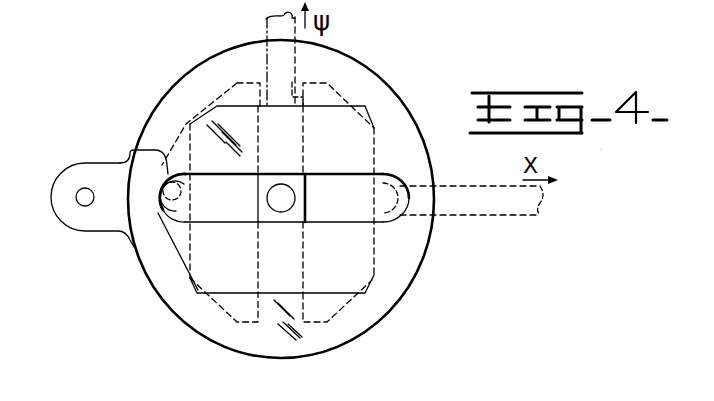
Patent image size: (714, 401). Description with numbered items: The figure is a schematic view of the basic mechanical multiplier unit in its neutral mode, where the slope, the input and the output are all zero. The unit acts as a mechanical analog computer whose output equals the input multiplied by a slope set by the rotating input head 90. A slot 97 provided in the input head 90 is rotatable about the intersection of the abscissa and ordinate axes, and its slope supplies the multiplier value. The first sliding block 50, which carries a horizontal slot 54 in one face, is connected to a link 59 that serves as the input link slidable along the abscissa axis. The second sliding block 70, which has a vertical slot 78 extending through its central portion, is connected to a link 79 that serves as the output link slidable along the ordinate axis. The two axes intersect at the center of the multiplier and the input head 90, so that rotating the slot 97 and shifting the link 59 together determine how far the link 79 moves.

The rotating input head 90 is at (182, 82).
The slot 97 is at (132, 151).
The vertical slot 78 is at (152, 200).
The second sliding block 70 is at (176, 249).
The first sliding block 50 is at (338, 101).
The horizontal slot 54 is at (292, 82).
The link 79 is at (263, 28).
The link 59 is at (536, 218).